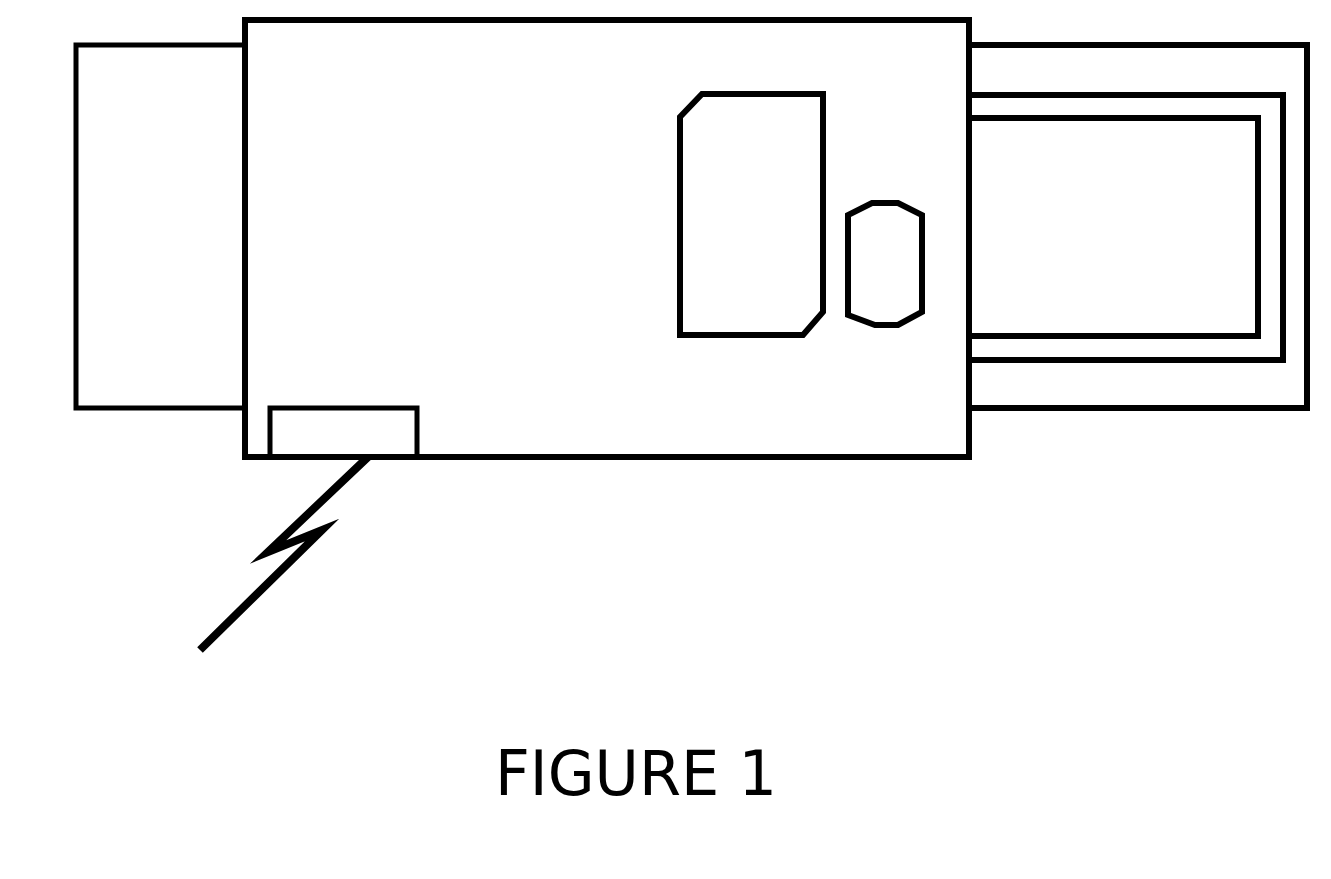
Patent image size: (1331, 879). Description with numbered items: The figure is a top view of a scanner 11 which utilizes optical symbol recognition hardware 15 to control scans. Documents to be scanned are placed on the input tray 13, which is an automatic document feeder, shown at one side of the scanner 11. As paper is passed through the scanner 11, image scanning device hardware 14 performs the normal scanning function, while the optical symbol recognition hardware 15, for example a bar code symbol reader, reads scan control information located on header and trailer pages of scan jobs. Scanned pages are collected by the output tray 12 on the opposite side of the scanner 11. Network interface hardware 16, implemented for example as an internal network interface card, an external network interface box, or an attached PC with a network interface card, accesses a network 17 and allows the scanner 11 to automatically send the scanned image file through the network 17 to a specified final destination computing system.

The scanner 11 is at (935, 460).
The output tray 12 is at (141, 412).
The input tray 13 is at (1153, 412).
The image scanning device hardware 14 is at (718, 340).
The optical symbol recognition hardware 15 is at (885, 332).
The network interface hardware 16 is at (306, 462).
The network 17 is at (262, 603).